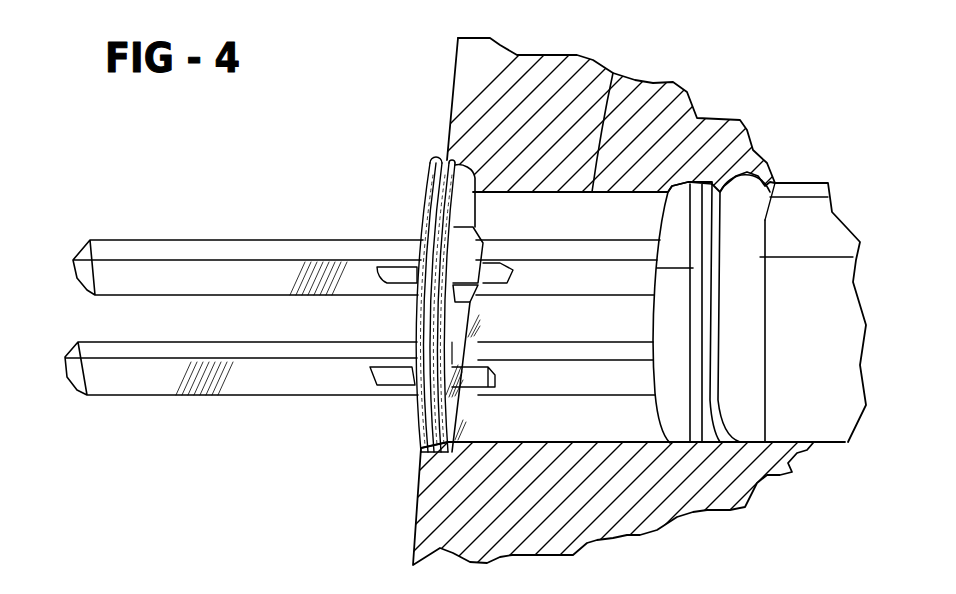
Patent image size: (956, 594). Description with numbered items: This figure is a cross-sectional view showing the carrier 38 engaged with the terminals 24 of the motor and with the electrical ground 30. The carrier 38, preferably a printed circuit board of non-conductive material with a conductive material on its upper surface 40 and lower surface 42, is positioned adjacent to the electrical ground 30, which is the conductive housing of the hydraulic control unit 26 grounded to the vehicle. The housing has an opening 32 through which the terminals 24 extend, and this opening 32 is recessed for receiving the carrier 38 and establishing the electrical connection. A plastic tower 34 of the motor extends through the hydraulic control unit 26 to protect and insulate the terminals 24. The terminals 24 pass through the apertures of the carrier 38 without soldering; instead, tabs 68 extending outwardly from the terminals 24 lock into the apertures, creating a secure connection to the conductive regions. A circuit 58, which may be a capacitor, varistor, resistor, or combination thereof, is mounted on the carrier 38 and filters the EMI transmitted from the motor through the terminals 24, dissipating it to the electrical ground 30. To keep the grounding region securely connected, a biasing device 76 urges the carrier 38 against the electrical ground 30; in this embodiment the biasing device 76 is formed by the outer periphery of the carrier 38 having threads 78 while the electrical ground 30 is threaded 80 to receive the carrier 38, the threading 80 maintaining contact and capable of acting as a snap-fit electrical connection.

The terminals 24 is at (80, 285).
The hydraulic control unit 26 is at (653, 88).
The electrical ground 30 is at (445, 66).
The opening 32 is at (613, 73).
The plastic tower 34 is at (805, 210).
The carrier 38 is at (455, 430).
The upper surface 40 is at (463, 208).
The lower surface 42 is at (426, 205).
The circuit 58 is at (467, 300).
The tabs 68 is at (398, 277).
The biasing device 76 is at (410, 451).
The threads 78 is at (430, 160).
The threaded 80 is at (437, 460).